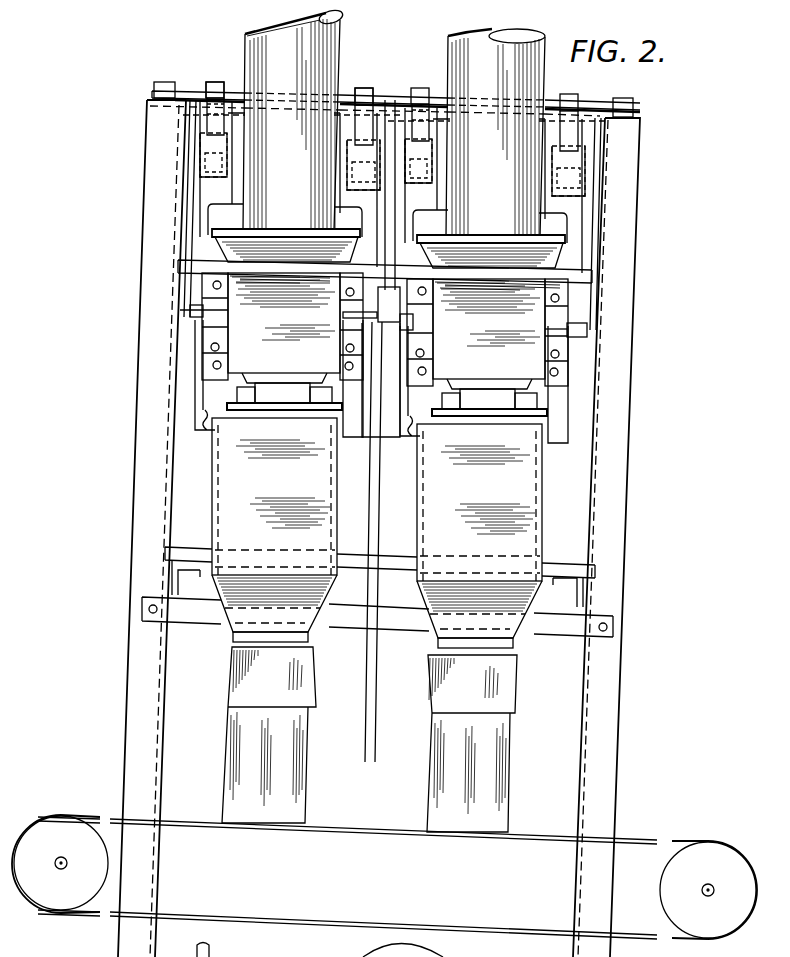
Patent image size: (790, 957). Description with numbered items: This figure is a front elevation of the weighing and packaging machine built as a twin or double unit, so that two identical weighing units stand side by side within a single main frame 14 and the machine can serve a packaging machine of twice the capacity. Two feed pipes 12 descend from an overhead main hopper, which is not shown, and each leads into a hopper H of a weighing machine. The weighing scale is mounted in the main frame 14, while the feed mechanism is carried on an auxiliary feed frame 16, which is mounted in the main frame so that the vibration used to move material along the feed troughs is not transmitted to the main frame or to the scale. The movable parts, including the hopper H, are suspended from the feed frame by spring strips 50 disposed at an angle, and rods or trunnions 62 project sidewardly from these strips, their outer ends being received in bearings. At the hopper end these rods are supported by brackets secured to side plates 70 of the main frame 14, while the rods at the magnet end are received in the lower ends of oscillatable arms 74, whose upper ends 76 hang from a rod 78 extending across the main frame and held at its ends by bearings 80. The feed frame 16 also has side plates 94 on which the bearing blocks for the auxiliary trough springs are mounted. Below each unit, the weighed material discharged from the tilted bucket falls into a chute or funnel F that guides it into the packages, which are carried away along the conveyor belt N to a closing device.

The feed pipe 12 is at (258, 52).
The main frame 14 is at (612, 493).
The feed frame 16 is at (212, 192).
The spring strips 50 is at (210, 297).
The rods or trunnions 62 is at (195, 312).
The side plates 70 is at (185, 157).
The oscillatable arms 74 is at (213, 125).
The upper ends of arms 76 is at (216, 82).
The rod 78 is at (356, 95).
The bearings 80 is at (160, 82).
The side plates of feed frame 94 is at (200, 237).
The hopper H is at (240, 330).
The chute or funnel F is at (255, 613).
The conveyor belt N is at (634, 841).